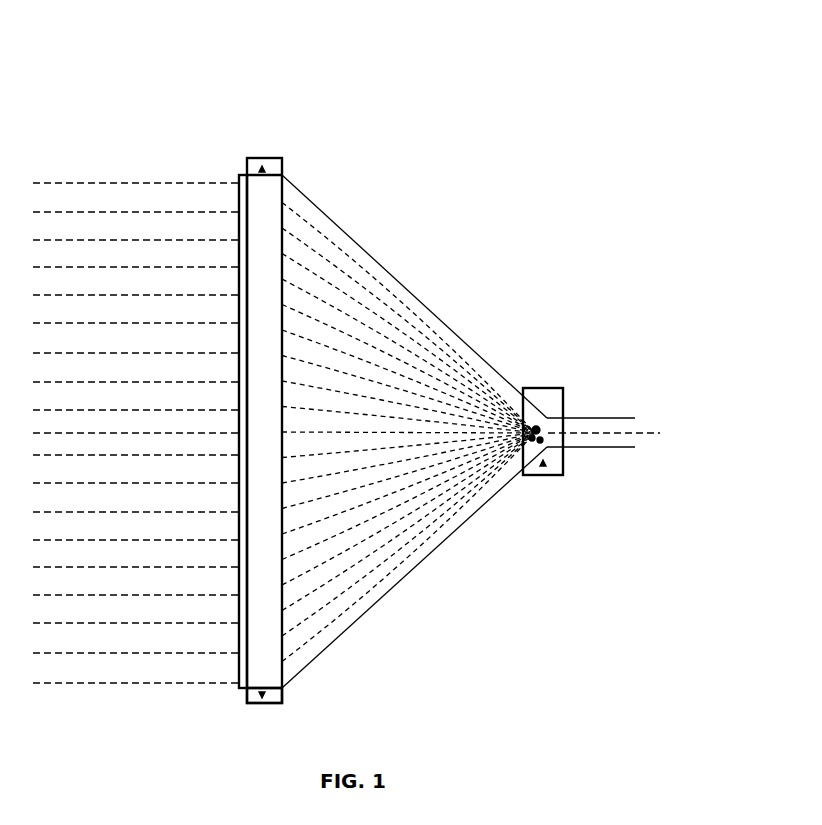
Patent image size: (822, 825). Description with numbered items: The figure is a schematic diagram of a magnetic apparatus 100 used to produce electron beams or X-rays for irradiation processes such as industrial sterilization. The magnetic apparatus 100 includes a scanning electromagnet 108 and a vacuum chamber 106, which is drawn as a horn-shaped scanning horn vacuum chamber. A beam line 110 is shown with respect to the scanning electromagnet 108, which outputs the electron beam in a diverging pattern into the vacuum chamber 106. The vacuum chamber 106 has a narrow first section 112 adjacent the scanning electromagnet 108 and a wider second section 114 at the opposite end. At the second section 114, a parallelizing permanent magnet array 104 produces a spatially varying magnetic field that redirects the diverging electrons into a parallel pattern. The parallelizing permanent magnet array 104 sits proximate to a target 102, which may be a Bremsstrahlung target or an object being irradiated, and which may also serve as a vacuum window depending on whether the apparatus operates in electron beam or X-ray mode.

The magnetic apparatus 100 is at (441, 56).
The target 102 is at (239, 198).
The parallelizing permanent magnet array 104 is at (283, 157).
The vacuum chamber 106 is at (406, 289).
The scanning electromagnet 108 is at (563, 388).
The beam line 110 is at (633, 438).
The first section 112 is at (546, 476).
The second section 114 is at (256, 705).